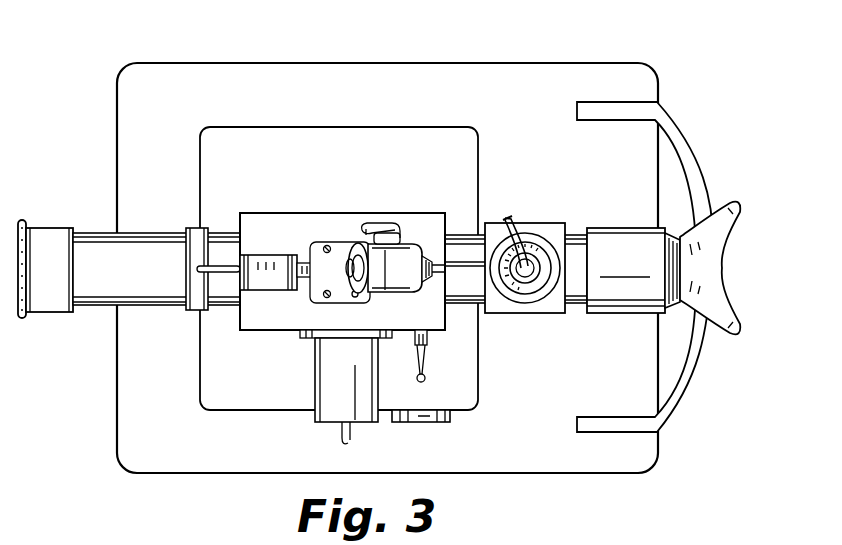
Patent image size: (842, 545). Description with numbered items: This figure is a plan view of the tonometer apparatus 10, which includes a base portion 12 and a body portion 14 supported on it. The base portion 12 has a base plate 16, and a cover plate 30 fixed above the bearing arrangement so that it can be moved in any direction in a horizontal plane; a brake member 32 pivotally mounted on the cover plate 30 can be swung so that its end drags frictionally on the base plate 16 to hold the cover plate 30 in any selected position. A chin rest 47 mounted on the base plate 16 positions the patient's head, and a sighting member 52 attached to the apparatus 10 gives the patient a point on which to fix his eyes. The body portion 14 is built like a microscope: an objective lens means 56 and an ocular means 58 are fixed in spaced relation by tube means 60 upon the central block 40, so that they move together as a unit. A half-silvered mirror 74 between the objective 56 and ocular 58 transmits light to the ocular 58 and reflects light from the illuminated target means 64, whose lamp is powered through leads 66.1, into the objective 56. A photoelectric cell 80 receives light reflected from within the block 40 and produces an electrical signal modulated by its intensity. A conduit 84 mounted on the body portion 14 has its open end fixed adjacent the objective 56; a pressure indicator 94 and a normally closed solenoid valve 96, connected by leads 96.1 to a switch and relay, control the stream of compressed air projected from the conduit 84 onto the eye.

The tonometer apparatus 10 is at (548, 48).
The base portion 12 is at (334, 85).
The body portion 14 is at (289, 212).
The base plate 16 is at (595, 462).
The cover plate 30 is at (218, 137).
The brake member 32 is at (396, 423).
The central block 40 is at (346, 213).
The chin rest 47 is at (675, 411).
The sighting member 52 is at (425, 376).
The objective lens means 56 is at (614, 227).
The ocular means 58 is at (50, 228).
The tube means 60 is at (153, 303).
The illuminated target means 64 is at (530, 300).
The leads 66.1 is at (512, 216).
The half-silvered mirror 74 is at (565, 307).
The photoelectric cell 80 is at (316, 393).
The conduit 84 is at (463, 276).
The pressure indicator 94 is at (267, 293).
The solenoid valve 96 is at (405, 250).
The leads 96.1 is at (377, 230).